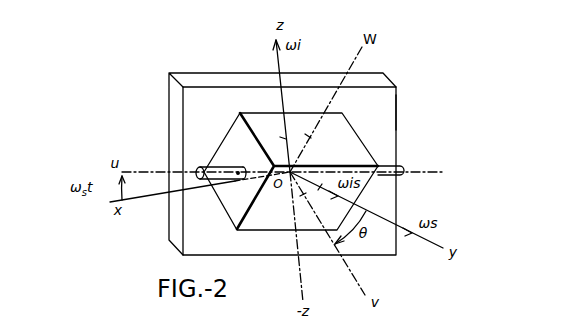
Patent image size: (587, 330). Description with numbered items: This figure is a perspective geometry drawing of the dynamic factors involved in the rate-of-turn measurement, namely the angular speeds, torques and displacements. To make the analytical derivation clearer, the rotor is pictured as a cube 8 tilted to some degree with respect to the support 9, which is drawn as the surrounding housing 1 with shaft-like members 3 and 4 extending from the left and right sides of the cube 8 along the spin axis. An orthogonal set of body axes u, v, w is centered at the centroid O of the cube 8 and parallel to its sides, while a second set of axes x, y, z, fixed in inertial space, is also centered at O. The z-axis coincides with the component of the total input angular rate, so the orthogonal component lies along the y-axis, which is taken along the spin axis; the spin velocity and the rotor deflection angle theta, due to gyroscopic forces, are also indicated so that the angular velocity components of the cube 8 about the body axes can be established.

The housing 1 is at (210, 69).
The shaft 3 is at (209, 167).
The shaft 4 is at (390, 176).
The rotor (cube) 8 is at (353, 140).
The support 9 is at (383, 110).